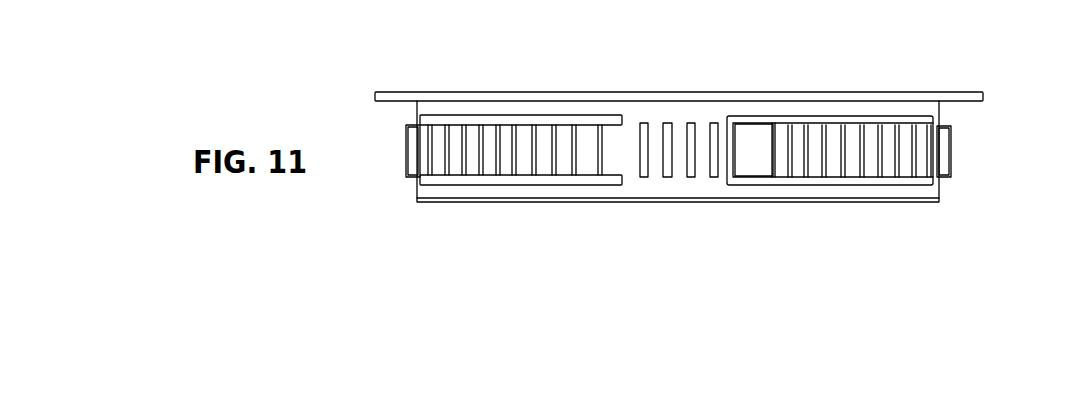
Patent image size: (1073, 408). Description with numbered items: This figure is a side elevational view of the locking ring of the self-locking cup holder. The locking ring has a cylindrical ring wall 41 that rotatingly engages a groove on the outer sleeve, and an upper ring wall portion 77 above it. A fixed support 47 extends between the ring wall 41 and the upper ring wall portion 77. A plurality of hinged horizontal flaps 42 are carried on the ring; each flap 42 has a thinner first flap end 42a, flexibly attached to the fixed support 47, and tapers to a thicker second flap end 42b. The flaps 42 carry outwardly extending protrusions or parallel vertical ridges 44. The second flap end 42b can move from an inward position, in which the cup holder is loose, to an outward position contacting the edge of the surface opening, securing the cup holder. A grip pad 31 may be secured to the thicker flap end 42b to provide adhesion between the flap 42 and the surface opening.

The grip pad 31 is at (408, 160).
The cylindrical ring wall 41 is at (878, 200).
The hinged horizontal flap 42 is at (679, 104).
The first flap end 42a is at (675, 160).
The second flap end 42b is at (945, 178).
The parallel vertical ridges 44 is at (552, 128).
The fixed support 47 is at (725, 205).
The upper ring wall portion 77 is at (934, 108).